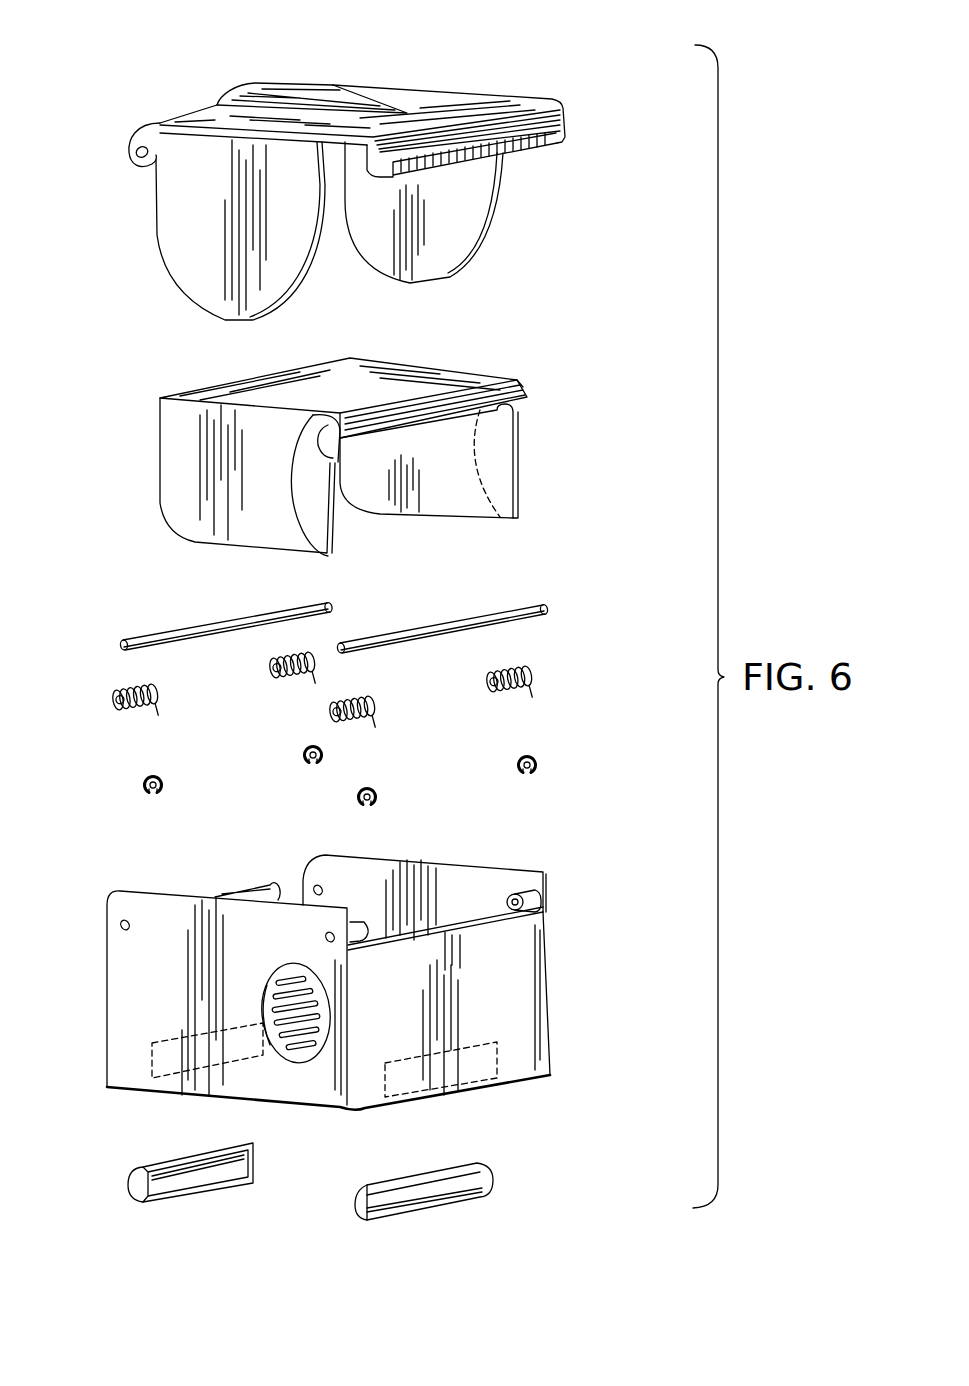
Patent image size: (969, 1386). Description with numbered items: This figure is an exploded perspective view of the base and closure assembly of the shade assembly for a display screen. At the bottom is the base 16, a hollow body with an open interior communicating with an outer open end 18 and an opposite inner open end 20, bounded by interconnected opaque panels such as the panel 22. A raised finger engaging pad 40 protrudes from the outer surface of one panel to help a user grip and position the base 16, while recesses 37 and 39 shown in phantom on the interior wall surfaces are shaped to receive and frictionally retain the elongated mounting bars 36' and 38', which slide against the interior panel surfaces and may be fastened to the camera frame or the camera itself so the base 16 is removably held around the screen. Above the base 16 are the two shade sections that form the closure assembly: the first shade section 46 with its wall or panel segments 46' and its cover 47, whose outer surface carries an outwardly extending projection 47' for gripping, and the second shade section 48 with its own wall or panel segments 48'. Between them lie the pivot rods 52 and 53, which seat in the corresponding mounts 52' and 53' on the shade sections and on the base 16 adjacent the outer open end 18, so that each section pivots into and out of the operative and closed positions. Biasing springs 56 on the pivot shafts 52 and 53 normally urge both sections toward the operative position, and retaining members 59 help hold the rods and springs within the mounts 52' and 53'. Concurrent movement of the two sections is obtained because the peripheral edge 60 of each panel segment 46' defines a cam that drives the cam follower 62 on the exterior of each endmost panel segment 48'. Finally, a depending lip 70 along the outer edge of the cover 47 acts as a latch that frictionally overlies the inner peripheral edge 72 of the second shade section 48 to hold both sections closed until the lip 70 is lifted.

The base 16 is at (583, 960).
The outer open end 18 is at (452, 900).
The inner open end 20 is at (300, 1107).
The panel 22 is at (540, 1030).
The mounting bar 36' is at (198, 1202).
The recess 37 is at (150, 1077).
The mounting bar 38' is at (434, 1222).
The recess 39 is at (497, 1078).
The finger engaging pad 40 is at (295, 1058).
The first shade section 46 is at (383, 181).
The wall or panel segment 46' is at (294, 234).
The cover 47 is at (362, 85).
The outwardly extending projection 47' is at (291, 63).
The second shade section 48 is at (382, 444).
The wall or panel segment 48' is at (295, 434).
The pivot rod 52 is at (196, 614).
The mount 52' is at (188, 511).
The pivot rod 53 is at (497, 629).
The mount 53' is at (480, 632).
The biasing spring 56 is at (110, 697).
The retaining member 59 is at (143, 785).
The peripheral edge 60 is at (290, 295).
The cam follower 62 is at (293, 520).
The depending lip 70 is at (563, 108).
The inner peripheral edge 72 is at (527, 393).